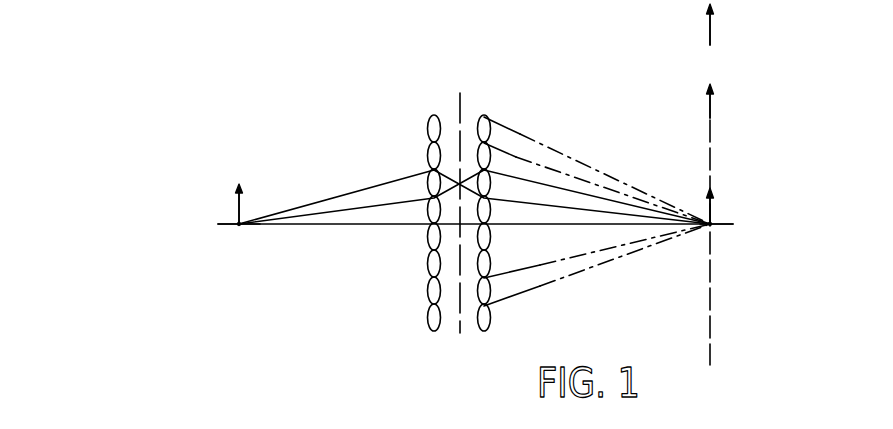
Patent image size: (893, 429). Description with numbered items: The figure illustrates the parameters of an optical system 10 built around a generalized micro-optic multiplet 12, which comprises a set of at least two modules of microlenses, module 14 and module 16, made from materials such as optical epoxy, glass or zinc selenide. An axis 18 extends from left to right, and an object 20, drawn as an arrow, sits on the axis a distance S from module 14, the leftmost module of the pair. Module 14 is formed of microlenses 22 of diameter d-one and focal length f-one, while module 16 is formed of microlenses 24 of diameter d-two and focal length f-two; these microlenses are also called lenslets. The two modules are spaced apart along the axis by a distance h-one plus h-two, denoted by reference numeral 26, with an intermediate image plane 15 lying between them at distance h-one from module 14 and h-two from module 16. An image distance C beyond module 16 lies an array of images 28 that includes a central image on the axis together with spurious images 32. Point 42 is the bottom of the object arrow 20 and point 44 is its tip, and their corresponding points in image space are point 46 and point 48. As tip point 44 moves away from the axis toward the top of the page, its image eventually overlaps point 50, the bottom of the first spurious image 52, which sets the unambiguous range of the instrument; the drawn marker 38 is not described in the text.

The optical system 10 is at (769, 184).
The micro-optic multiplet 12 is at (438, 224).
The module of microlenses 14 is at (405, 205).
The intermediate image plane 15 is at (460, 93).
The module of microlenses 16 is at (509, 204).
The axis 18 is at (228, 226).
The object 20 is at (235, 206).
The microlenses 22 is at (431, 262).
The microlenses 24 is at (489, 237).
The module spacing distance 26 is at (454, 224).
The array of images 28 is at (748, 151).
The spurious images 32 is at (689, 71).
The image point displacement 38 is at (714, 192).
The bottom point of object arrow 42 is at (242, 230).
The tip point of object arrow 44 is at (243, 193).
The image point 46 is at (716, 229).
The image point 48 is at (708, 178).
The bottom point of first spurious image 50 is at (712, 118).
The first spurious image 52 is at (709, 116).